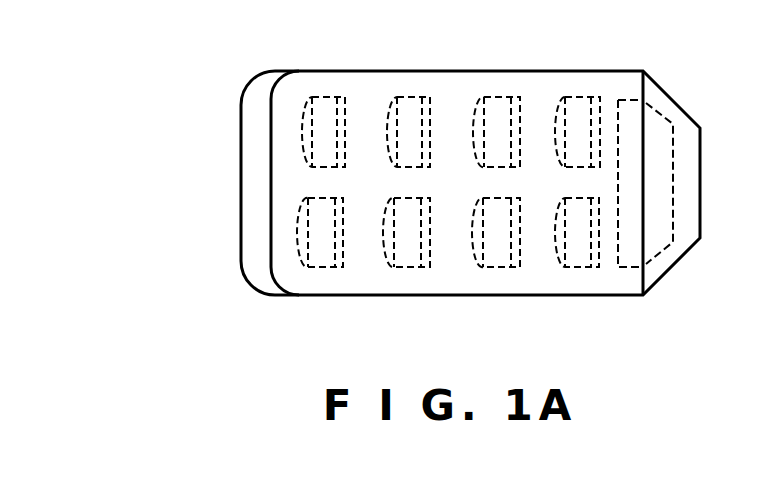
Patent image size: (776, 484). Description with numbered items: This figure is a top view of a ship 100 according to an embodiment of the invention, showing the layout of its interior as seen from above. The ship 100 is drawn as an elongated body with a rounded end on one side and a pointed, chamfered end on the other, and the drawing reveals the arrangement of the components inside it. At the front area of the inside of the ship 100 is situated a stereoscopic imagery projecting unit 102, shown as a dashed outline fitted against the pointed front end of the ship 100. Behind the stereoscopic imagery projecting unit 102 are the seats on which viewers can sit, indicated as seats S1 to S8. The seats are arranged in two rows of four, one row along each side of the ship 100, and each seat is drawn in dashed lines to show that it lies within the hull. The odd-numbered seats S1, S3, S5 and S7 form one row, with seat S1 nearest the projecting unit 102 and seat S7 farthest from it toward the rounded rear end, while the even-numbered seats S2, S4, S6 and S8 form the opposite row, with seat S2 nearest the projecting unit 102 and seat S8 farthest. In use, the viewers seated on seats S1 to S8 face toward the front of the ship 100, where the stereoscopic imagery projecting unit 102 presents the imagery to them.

The ship 100 is at (687, 108).
The stereoscopic imagery projecting unit 102 is at (633, 97).
The seat S1 is at (577, 97).
The seat S2 is at (565, 267).
The seat S3 is at (500, 97).
The seat S4 is at (493, 267).
The seat S5 is at (413, 97).
The seat S6 is at (405, 267).
The seat S7 is at (327, 97).
The seat S8 is at (321, 267).